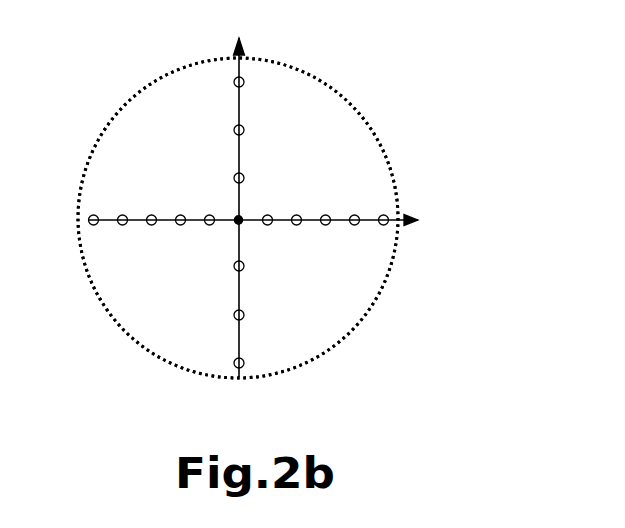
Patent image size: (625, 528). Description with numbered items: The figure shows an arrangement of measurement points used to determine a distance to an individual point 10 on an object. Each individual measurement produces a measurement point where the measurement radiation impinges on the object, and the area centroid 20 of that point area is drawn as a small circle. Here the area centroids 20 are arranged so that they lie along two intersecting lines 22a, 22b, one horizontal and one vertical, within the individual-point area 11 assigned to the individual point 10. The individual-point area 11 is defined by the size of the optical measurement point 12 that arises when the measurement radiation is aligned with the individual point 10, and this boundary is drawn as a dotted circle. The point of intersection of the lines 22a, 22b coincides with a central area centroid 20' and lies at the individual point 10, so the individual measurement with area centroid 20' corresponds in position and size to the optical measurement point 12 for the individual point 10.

The individual point 10 is at (161, 292).
The individual-point area 11 is at (225, 218).
The optical measurement point 12 is at (238, 237).
The area centroid 20 is at (175, 66).
The area centroid of an individual measurement 20' is at (151, 163).
The first intersecting line 22a is at (217, 203).
The second intersecting line 22b is at (306, 207).